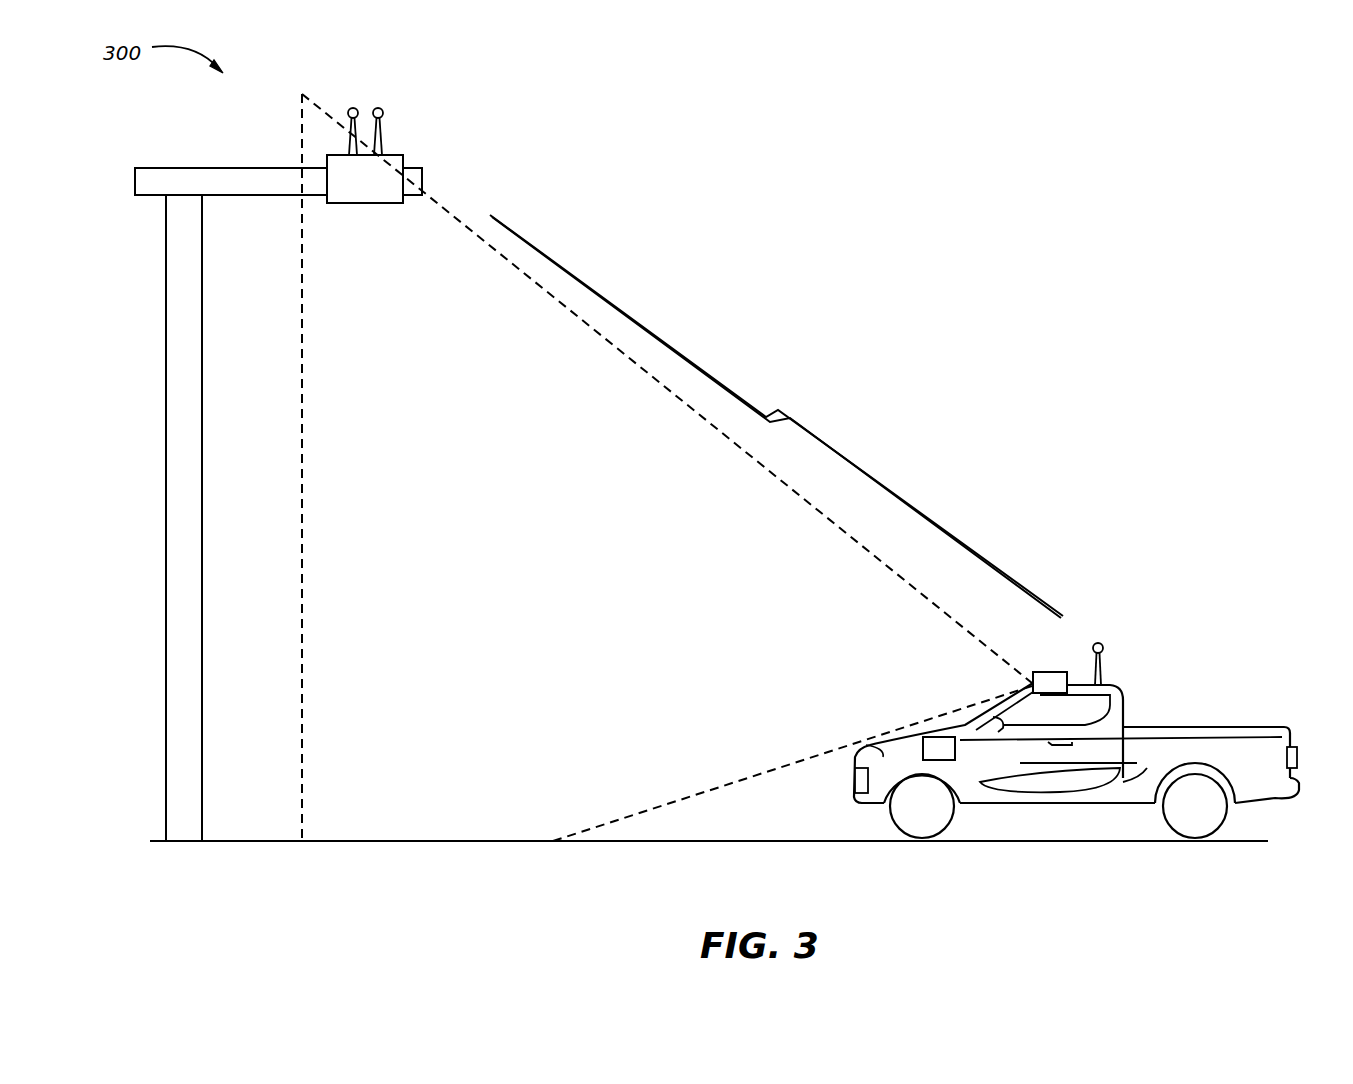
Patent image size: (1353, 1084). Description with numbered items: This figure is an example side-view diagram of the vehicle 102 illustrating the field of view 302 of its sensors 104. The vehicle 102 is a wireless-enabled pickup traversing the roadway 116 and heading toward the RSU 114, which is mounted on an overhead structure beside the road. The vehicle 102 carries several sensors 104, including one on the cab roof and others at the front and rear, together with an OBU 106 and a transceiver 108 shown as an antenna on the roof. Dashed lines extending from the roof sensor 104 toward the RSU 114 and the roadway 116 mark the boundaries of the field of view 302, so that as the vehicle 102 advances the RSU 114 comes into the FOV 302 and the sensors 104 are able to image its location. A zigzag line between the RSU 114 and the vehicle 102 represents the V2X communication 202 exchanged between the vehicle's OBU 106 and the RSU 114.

The vehicle 102 is at (1202, 725).
The sensors 104 is at (1047, 672).
The OBU 106 is at (955, 750).
The transceiver 108 is at (1103, 680).
The RSU 114 is at (400, 152).
The roadway 116 is at (740, 840).
The V2X communication 202 is at (697, 347).
The field of view 302 is at (300, 398).